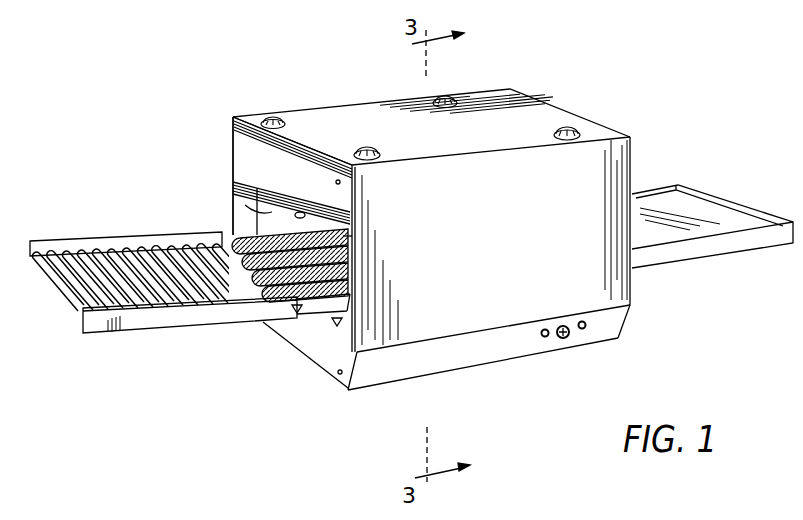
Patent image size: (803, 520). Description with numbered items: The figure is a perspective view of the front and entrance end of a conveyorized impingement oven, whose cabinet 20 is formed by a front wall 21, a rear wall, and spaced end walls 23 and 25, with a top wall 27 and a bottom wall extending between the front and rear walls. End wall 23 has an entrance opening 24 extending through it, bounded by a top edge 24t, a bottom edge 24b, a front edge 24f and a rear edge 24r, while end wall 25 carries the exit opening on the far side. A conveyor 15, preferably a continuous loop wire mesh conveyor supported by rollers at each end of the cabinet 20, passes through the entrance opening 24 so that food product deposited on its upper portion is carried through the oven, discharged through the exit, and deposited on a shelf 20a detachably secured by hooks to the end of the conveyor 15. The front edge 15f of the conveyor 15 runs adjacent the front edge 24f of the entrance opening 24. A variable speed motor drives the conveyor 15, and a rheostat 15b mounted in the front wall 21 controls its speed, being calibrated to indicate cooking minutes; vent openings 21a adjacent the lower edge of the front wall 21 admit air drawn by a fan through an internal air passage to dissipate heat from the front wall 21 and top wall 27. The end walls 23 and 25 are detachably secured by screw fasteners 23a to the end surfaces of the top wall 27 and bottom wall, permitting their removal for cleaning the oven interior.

The cabinet 20 is at (360, 105).
The shelf 20a is at (663, 222).
The front wall 21 is at (428, 320).
The vent openings 21a is at (567, 338).
The end wall 23 is at (247, 153).
The screw fasteners 23a is at (231, 118).
The entrance opening 24 is at (231, 205).
The rear edge of entrance opening 24r is at (262, 214).
The top edge of entrance opening 24t is at (350, 197).
The front edge of entrance opening 24f is at (343, 243).
The bottom edge of entrance opening 24b is at (337, 322).
The end wall 25 is at (633, 160).
The top wall 27 is at (478, 123).
The conveyor 15 is at (297, 305).
The front edge of conveyor 15f is at (343, 293).
The rheostat 15b is at (587, 327).